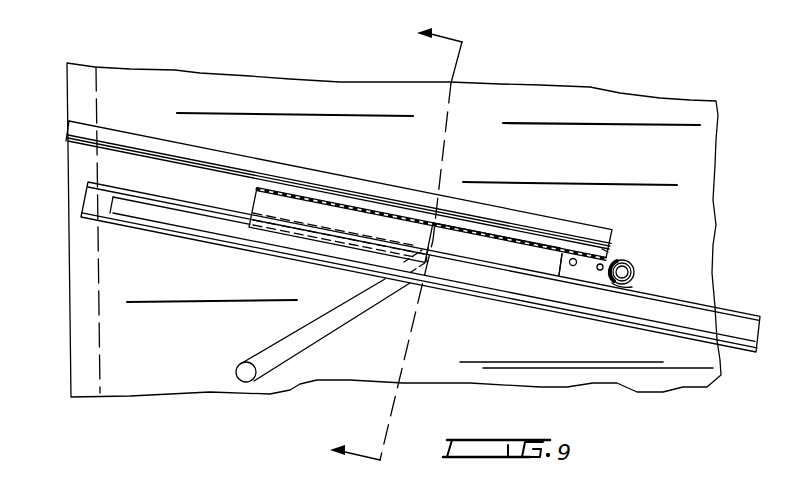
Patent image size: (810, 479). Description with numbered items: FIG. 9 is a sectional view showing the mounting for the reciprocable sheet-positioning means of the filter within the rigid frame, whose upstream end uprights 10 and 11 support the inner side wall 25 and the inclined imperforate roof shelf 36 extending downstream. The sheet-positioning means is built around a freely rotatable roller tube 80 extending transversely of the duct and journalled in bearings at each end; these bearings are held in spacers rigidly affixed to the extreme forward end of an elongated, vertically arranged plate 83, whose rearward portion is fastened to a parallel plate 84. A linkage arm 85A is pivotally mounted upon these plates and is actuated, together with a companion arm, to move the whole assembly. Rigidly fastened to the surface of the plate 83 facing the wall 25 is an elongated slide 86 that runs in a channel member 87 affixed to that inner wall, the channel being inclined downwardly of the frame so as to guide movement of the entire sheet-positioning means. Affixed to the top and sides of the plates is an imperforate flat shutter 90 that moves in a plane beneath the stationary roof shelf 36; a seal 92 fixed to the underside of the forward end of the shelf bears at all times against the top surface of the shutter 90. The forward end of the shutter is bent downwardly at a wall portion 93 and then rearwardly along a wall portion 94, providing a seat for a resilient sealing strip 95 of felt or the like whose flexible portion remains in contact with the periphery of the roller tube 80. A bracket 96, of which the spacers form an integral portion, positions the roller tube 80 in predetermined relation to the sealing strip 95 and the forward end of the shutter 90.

The upstream end upright 10 is at (382, 241).
The upstream end upright 11 is at (76, 278).
The inner side wall 25 is at (716, 200).
The roof shelf 36 is at (382, 197).
The roller tube 80 is at (636, 272).
The plate 83 is at (527, 257).
The plate 84 is at (247, 227).
The linkage arm 85A is at (308, 340).
The slide 86 is at (162, 217).
The channel member 87 is at (134, 194).
The shutter 90 is at (347, 206).
The seal 92 is at (605, 250).
The wall portion 93 is at (622, 264).
The wall portion 94 is at (597, 272).
The sealing strip 95 is at (613, 285).
The bracket 96 is at (563, 268).